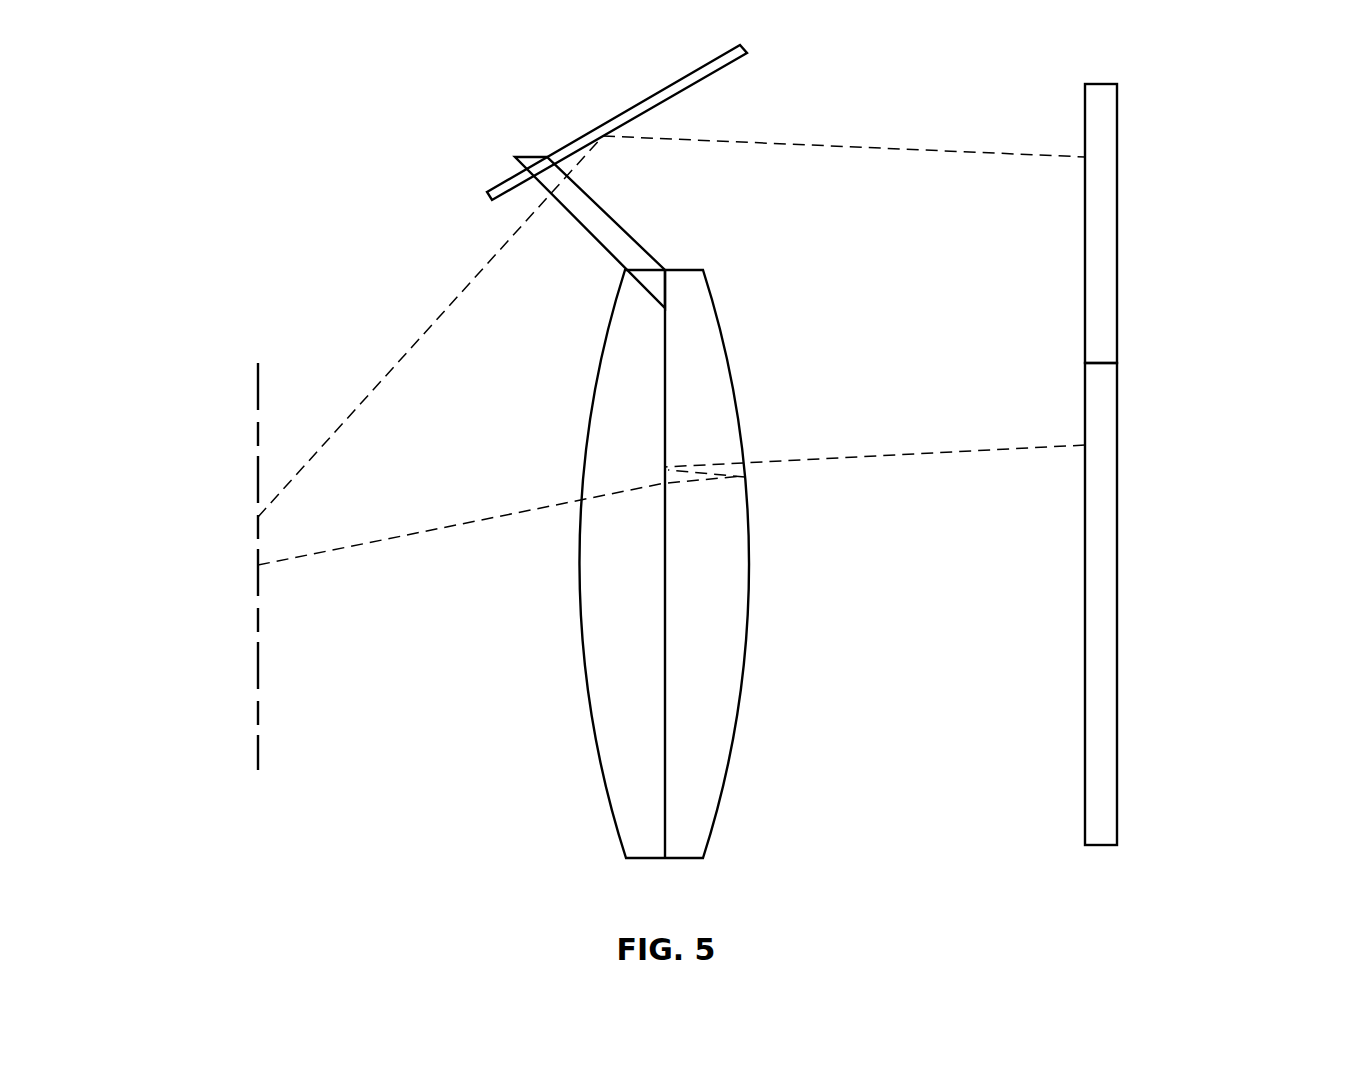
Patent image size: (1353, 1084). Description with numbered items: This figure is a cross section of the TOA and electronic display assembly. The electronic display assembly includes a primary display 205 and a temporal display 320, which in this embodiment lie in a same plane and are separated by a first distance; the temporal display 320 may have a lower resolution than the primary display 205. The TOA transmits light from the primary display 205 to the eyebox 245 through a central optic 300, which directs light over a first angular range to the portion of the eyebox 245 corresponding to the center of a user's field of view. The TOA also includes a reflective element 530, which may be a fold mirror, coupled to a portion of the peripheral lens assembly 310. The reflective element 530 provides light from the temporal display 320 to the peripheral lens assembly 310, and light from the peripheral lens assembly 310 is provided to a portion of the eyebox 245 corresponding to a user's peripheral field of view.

The reflective element 530 is at (615, 117).
The peripheral lens assembly 310 is at (605, 215).
The eyebox 245 is at (258, 363).
The temporal display 320 is at (1117, 159).
The primary display 205 is at (1117, 489).
The central optic 300 is at (743, 691).